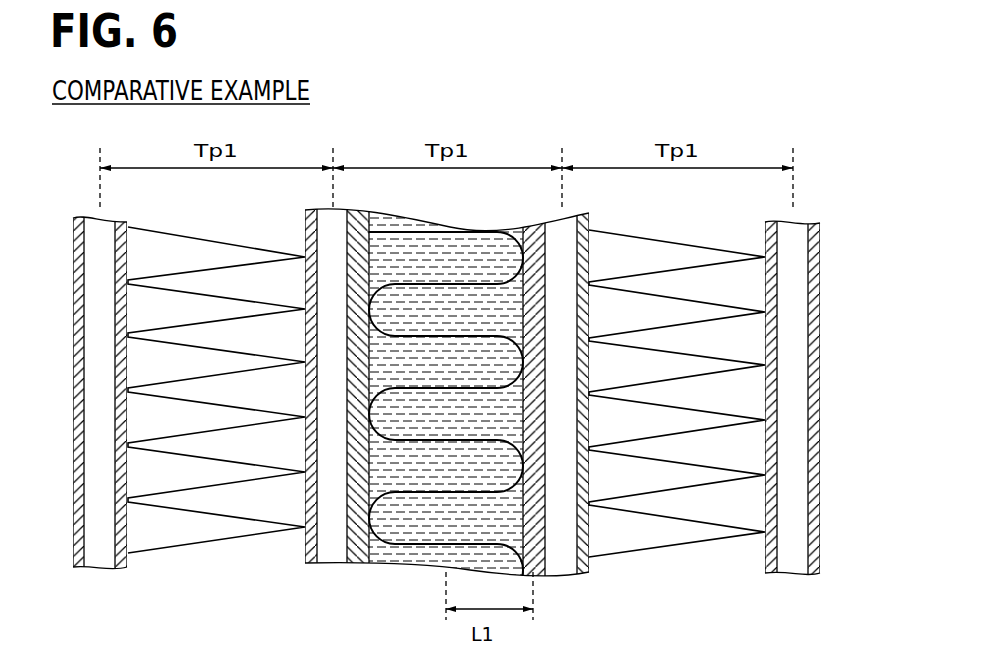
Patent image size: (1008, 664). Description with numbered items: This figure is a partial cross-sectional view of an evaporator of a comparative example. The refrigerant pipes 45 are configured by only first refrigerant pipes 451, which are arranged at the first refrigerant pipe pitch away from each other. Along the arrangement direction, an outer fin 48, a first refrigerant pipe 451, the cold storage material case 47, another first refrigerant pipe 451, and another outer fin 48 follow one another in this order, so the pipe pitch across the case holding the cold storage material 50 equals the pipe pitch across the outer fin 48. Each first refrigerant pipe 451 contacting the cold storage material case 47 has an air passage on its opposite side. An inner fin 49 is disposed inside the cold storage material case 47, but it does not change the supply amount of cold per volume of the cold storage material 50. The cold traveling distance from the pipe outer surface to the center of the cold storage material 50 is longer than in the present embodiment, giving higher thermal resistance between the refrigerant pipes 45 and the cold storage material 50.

The refrigerant pipe 45 is at (447, 426).
The first refrigerant pipe 451 is at (307, 362).
The cold storage material case 47 is at (368, 402).
The outer fin 48 is at (198, 323).
The inner fin 49 is at (410, 492).
The cold storage material 50 is at (382, 468).